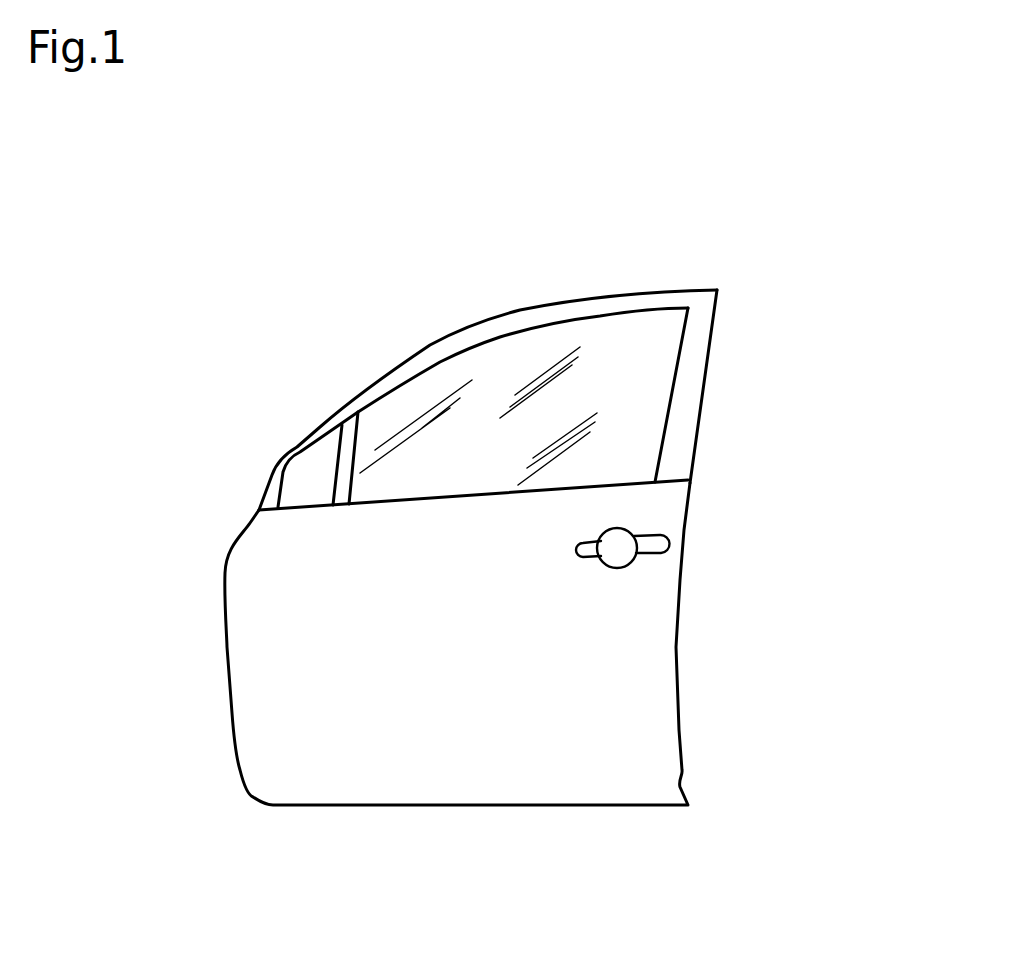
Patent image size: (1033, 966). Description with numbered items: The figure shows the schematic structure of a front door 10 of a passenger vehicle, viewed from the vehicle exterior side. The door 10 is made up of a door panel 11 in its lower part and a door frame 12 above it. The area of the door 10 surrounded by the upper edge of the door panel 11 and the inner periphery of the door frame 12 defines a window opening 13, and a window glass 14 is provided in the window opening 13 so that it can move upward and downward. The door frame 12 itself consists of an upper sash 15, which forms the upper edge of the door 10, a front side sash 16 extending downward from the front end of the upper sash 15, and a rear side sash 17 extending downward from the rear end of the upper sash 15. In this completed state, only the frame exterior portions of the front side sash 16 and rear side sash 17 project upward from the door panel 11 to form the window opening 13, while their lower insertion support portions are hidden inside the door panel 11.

The door 10 is at (306, 307).
The door panel 11 is at (297, 667).
The door frame 12 is at (490, 368).
The window opening 13 is at (388, 396).
The window glass 14 is at (484, 375).
The upper sash 15 is at (592, 303).
The front side sash 16 is at (344, 468).
The rear side sash 17 is at (687, 453).